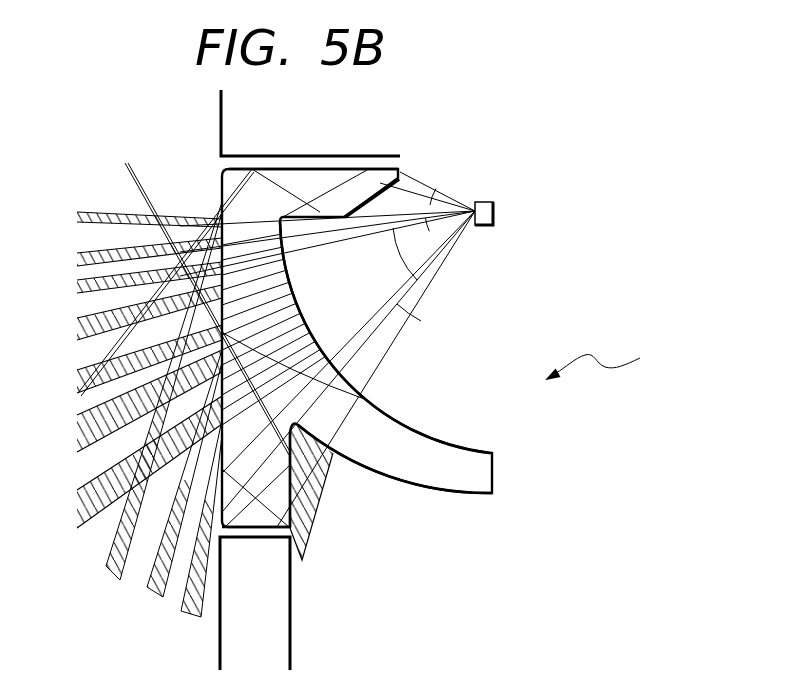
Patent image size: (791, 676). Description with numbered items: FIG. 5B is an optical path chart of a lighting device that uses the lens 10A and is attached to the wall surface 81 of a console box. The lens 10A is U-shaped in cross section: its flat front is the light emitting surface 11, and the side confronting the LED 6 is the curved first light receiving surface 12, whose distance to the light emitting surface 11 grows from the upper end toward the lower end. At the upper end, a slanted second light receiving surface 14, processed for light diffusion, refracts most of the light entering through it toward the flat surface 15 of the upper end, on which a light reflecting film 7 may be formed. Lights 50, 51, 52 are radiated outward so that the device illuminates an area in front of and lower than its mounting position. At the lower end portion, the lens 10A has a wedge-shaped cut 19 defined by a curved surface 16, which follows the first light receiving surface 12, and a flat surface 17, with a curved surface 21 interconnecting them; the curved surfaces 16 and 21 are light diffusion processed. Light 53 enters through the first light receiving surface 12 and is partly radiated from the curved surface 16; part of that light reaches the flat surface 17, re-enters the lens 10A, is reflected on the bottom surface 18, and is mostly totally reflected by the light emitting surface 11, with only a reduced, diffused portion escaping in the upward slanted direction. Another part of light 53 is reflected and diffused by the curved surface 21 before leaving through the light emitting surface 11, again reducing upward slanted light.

The wall surface 81 is at (271, 632).
The surface of the upper end of the lens 15 is at (312, 168).
The light reflecting film 7 is at (343, 160).
The second light receiving surface 14 is at (415, 185).
The light 50 is at (433, 190).
The LED 6 is at (496, 212).
The light 51 is at (445, 234).
The light 52 is at (418, 282).
The light 53 is at (412, 326).
The lens 10A is at (619, 360).
The first light receiving surface 12 is at (310, 317).
The light emitting surface 11 is at (367, 400).
The curved surface 21 is at (333, 468).
The curved surface 16 is at (388, 480).
The flat surface 17 is at (294, 500).
The bottom surface 18 is at (263, 532).
The wedge-shaped cut 19 is at (399, 602).